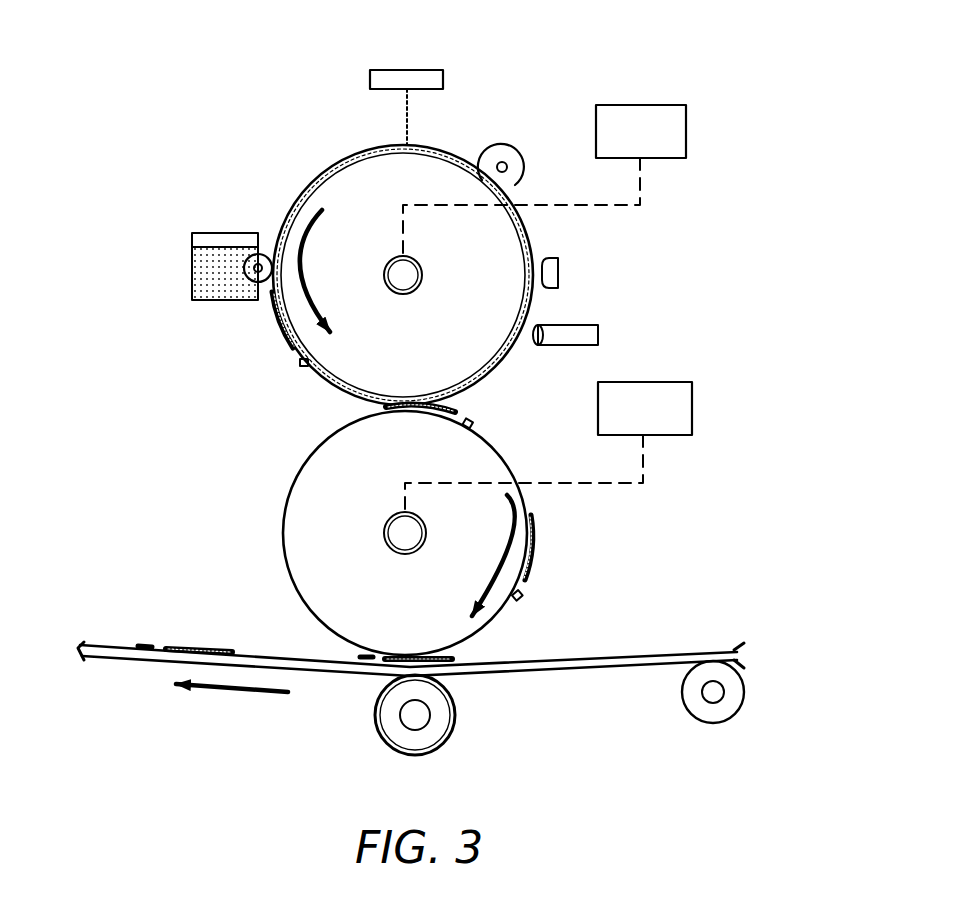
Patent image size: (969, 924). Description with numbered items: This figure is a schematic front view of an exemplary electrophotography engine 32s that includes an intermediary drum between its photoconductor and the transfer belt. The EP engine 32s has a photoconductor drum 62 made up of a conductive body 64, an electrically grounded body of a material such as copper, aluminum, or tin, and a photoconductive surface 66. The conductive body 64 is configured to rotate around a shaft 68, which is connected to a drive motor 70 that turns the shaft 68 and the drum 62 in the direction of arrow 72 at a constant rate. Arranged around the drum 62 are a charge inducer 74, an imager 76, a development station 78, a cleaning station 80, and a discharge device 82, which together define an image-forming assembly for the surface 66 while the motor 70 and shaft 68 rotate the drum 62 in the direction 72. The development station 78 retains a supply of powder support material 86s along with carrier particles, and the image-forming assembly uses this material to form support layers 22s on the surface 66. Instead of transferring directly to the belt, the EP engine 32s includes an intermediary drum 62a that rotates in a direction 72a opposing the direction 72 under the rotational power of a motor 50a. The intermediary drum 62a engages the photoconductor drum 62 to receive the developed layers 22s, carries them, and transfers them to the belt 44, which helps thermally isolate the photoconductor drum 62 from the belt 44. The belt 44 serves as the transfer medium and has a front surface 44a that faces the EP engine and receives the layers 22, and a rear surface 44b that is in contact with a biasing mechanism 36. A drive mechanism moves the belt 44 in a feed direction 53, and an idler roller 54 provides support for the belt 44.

The EP engine 32s is at (138, 58).
The photoconductor drum 62 is at (283, 182).
The photoconductive surface 66 is at (348, 160).
The conductive body 64 is at (418, 360).
The shaft 68 is at (420, 275).
The direction of rotation 72 is at (310, 242).
The drive motor 70 is at (672, 105).
The charge inducer 74 is at (500, 145).
The imager 76 is at (430, 70).
The development station 78 is at (180, 232).
The powder support material 86s is at (210, 263).
The discharge device 82 is at (560, 270).
The cleaning station 80 is at (578, 325).
The motor 50a is at (680, 382).
The intermediary drum 62a is at (276, 472).
The direction of rotation 72a is at (508, 520).
The support layers 22s is at (262, 320).
The layers 22 is at (190, 622).
The belt 44 is at (96, 708).
The front surface 44a is at (735, 650).
The rear surface 44b is at (596, 668).
The feed direction 53 is at (230, 690).
The biasing mechanism 36 is at (440, 722).
The idler roller 54 is at (716, 704).